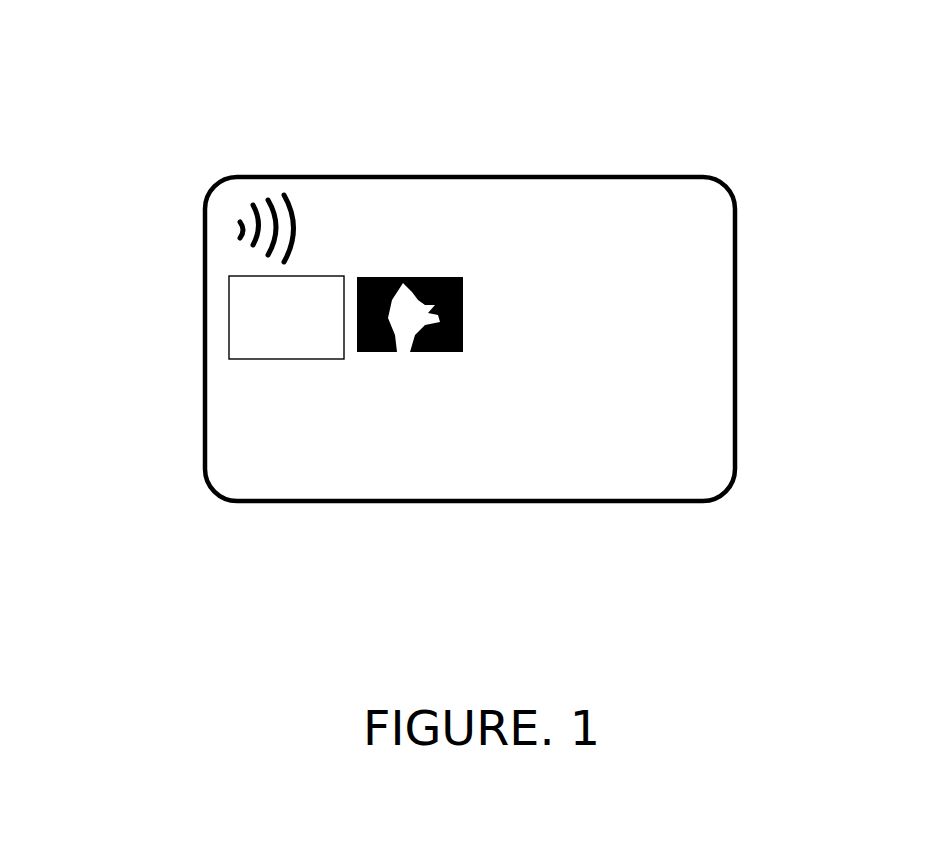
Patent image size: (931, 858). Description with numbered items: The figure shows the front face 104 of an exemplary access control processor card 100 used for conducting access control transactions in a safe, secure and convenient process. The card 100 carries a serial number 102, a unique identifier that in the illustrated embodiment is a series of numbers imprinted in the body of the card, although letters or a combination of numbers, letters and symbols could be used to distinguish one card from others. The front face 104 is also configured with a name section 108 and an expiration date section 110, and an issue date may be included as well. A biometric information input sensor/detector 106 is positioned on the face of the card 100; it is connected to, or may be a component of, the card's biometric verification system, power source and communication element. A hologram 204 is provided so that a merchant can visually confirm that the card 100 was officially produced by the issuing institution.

The access control processor card 100 is at (512, 269).
The serial number 102 is at (242, 377).
The front face 104 is at (445, 227).
The biometric information input sensor/detector 106 is at (243, 275).
The name section 108 is at (237, 450).
The expiration date section 110 is at (483, 458).
The hologram 204 is at (395, 263).